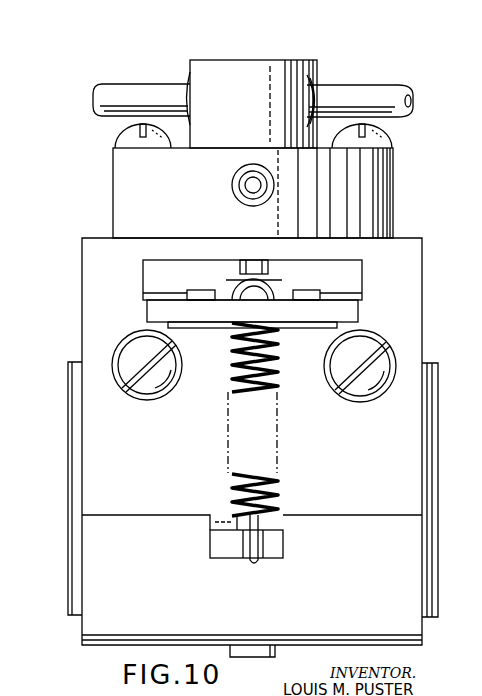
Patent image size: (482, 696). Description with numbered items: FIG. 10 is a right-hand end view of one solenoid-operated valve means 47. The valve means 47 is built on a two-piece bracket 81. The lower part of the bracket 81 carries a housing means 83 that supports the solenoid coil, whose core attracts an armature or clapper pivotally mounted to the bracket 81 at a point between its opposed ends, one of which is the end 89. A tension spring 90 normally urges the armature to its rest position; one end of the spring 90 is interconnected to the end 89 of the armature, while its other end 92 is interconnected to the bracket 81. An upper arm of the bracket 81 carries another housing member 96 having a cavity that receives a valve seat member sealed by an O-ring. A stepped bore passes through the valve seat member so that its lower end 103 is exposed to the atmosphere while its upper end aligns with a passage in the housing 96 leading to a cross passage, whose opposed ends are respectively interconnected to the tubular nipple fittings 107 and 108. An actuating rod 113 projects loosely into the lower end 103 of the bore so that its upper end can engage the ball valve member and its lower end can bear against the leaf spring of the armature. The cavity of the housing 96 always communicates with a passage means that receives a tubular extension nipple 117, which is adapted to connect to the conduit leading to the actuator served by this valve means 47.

The valve means 47 is at (303, 35).
The tubular nipple fitting 107 is at (149, 88).
The tubular nipple fitting 108 is at (366, 93).
The tubular extension nipple 117 is at (232, 178).
The housing member 96 is at (378, 190).
The actuating rod 113 is at (246, 277).
The lower end of the bore 103 is at (268, 270).
The end of the armature 89 is at (242, 307).
The tension spring 90 is at (247, 387).
The housing means 83 is at (68, 455).
The other end of the tension spring 92 is at (250, 562).
The two-piece bracket 81 is at (80, 631).